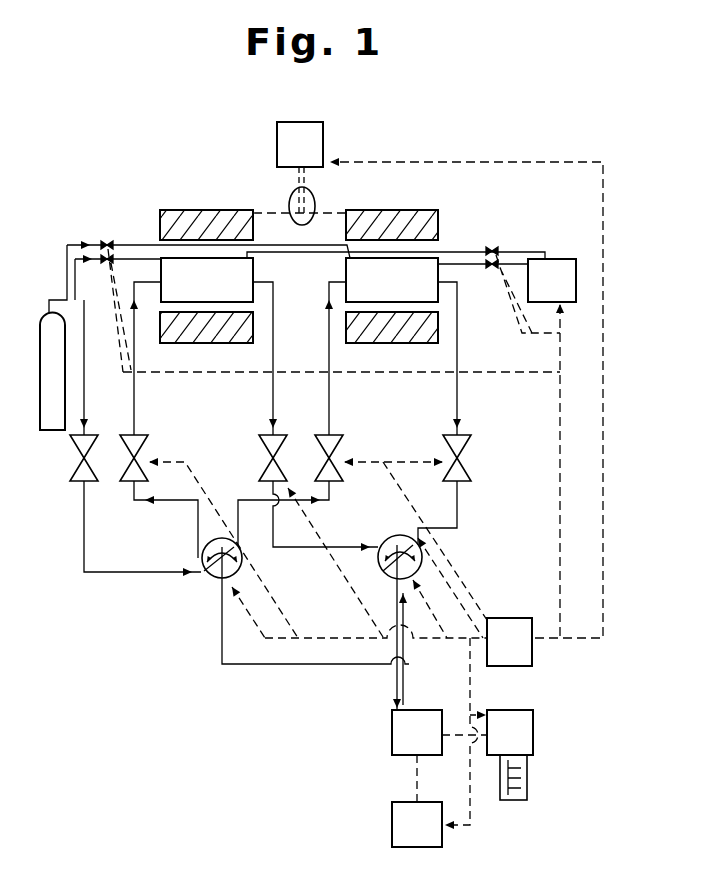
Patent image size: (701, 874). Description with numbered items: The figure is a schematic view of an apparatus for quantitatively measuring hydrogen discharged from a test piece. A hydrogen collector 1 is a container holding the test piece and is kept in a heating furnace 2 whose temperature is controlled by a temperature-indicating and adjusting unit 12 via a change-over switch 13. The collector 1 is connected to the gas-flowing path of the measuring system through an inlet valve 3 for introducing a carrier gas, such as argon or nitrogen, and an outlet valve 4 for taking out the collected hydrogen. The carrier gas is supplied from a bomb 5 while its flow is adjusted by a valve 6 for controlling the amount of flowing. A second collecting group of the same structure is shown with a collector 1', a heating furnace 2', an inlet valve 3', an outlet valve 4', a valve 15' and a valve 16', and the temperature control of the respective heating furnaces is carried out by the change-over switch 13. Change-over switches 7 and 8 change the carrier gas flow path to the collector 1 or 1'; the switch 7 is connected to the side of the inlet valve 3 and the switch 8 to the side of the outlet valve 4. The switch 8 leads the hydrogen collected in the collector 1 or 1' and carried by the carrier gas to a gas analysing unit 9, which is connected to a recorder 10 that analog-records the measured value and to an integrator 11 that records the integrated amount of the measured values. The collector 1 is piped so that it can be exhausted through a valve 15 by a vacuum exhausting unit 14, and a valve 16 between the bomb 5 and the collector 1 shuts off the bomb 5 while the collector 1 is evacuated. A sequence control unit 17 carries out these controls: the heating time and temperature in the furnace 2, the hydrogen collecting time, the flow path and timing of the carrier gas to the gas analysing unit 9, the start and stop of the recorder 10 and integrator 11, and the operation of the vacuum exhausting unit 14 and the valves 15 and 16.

The hydrogen collector 1 is at (207, 280).
The hydrogen collector 1' is at (392, 280).
The heating furnace 2 is at (206, 276).
The heating furnace 2' is at (392, 276).
The inlet valve 3 is at (139, 458).
The inlet valve 3' is at (338, 458).
The outlet valve 4 is at (267, 458).
The outlet valve 4' is at (464, 458).
The bomb 5 is at (52, 372).
The valve for controlling the amount of flowing 6 is at (79, 458).
The change-over switch 7 is at (220, 570).
The change-over switch 8 is at (399, 566).
The gas analysing unit 9 is at (417, 732).
The recorder 10 is at (510, 755).
The integrator 11 is at (417, 824).
The temperature-indicating and adjusting unit 12 is at (301, 162).
The change-over switch 13 is at (311, 215).
The vacuum exhausting unit 14 is at (552, 280).
The valve 15 is at (494, 237).
The valve 15' is at (486, 274).
The valve 16 is at (98, 269).
The valve 16' is at (115, 232).
The sequence control unit 17 is at (509, 642).